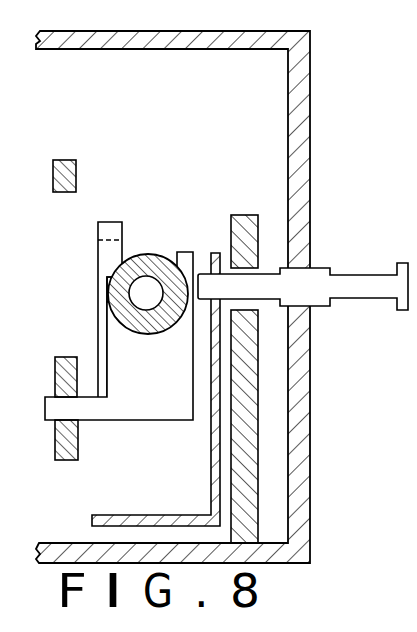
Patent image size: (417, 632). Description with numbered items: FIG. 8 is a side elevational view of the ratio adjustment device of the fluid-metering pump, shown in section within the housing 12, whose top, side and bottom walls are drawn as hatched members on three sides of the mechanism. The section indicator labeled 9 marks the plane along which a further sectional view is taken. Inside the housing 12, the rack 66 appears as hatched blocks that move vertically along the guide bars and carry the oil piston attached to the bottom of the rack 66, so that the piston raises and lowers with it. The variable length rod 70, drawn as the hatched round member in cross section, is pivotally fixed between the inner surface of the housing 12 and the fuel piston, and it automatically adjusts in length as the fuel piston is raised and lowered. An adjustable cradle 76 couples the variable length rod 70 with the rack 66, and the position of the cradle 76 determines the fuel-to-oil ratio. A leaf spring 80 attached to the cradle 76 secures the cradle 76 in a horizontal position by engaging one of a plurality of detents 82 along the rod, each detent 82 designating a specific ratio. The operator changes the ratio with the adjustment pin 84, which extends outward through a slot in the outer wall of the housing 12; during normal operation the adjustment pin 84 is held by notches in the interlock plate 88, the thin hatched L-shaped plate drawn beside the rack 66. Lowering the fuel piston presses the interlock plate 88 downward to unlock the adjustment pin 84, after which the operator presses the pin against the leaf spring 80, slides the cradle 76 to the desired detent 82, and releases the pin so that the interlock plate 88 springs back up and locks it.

The section line 9- 9 is at (358, 103).
The housing 12 is at (329, 211).
The rack 66 is at (66, 160).
The variable length rod 70 is at (135, 323).
The adjustable cradle 76 is at (141, 420).
The leaf spring 80 is at (108, 222).
The detent 82 is at (116, 290).
The adjustment pin 84 is at (361, 300).
The interlock plate 88 is at (143, 515).